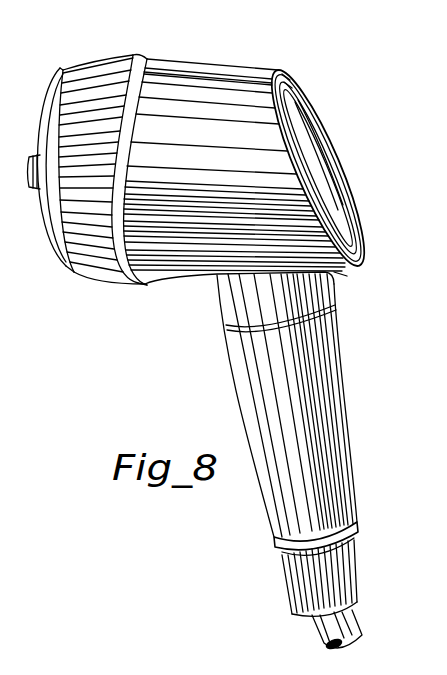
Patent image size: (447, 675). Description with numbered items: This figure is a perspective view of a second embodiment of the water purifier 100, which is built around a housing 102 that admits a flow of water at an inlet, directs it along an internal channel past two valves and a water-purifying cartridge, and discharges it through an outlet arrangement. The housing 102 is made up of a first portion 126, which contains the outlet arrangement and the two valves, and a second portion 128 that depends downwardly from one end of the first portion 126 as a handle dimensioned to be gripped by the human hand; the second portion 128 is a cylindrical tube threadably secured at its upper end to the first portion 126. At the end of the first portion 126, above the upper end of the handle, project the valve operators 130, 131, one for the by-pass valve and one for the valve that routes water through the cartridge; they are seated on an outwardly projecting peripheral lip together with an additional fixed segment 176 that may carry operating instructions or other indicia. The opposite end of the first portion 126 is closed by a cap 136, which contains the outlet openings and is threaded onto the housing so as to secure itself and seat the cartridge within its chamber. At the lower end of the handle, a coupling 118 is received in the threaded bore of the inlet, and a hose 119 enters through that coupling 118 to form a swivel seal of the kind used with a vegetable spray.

The water purifier 100 is at (197, 64).
The housing 102 is at (323, 368).
The coupling 118 is at (345, 575).
The hose 119 is at (358, 628).
The first portion 126 is at (250, 110).
The second portion 128 is at (280, 500).
The valve operator 130 is at (343, 165).
The valve operator 131 is at (337, 212).
The cap 136 is at (90, 64).
The segment 176 is at (307, 118).